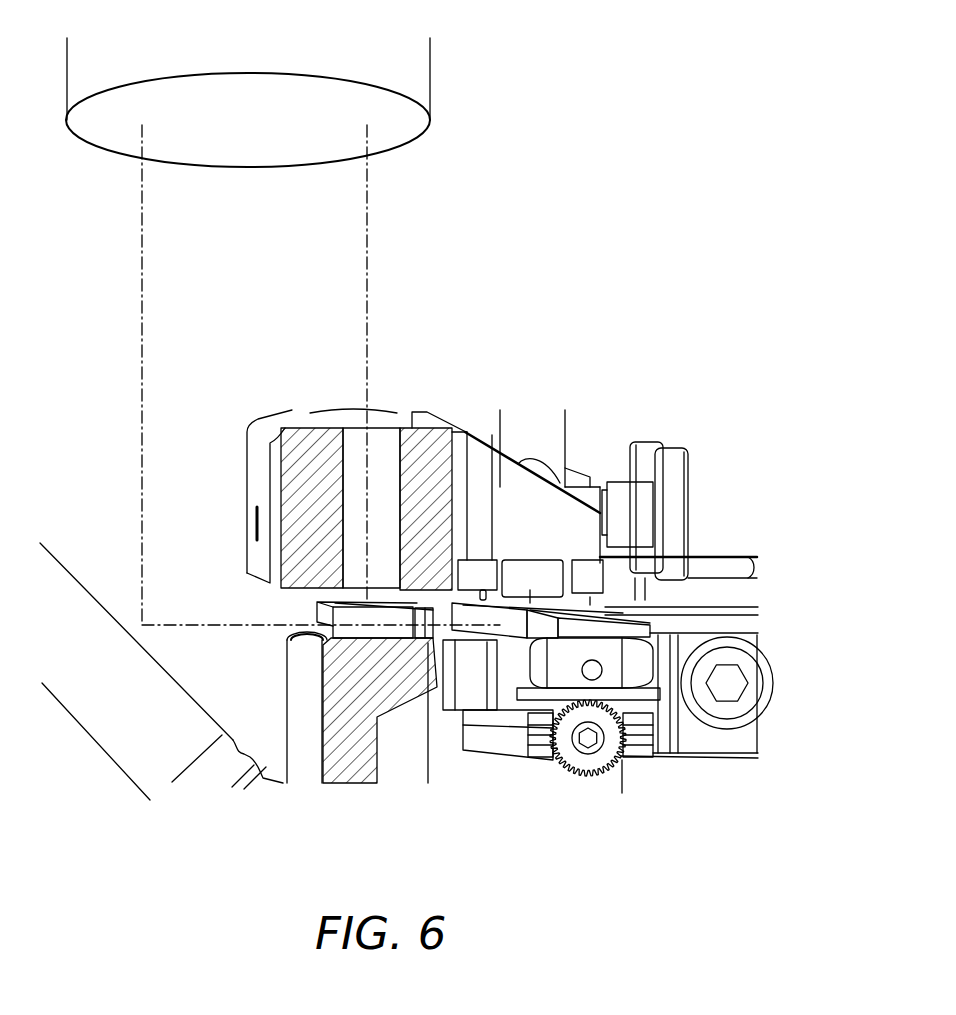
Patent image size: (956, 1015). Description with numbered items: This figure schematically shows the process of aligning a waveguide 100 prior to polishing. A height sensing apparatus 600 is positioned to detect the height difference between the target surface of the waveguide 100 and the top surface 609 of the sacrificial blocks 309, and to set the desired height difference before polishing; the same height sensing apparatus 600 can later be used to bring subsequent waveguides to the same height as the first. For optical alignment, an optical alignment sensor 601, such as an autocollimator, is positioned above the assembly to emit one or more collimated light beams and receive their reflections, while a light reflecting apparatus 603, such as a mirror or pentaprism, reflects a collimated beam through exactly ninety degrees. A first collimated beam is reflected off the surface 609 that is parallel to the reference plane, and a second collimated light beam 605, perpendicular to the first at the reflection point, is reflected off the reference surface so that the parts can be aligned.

The optical alignment sensor 601 is at (417, 72).
The second collimated light beam 605 is at (367, 282).
The light reflecting apparatus 603 is at (72, 567).
The height sensing apparatus 600 is at (760, 435).
The top surface of sacrificial blocks 609 is at (363, 602).
The sacrificial block 309 is at (312, 620).
The waveguide 100 is at (542, 625).